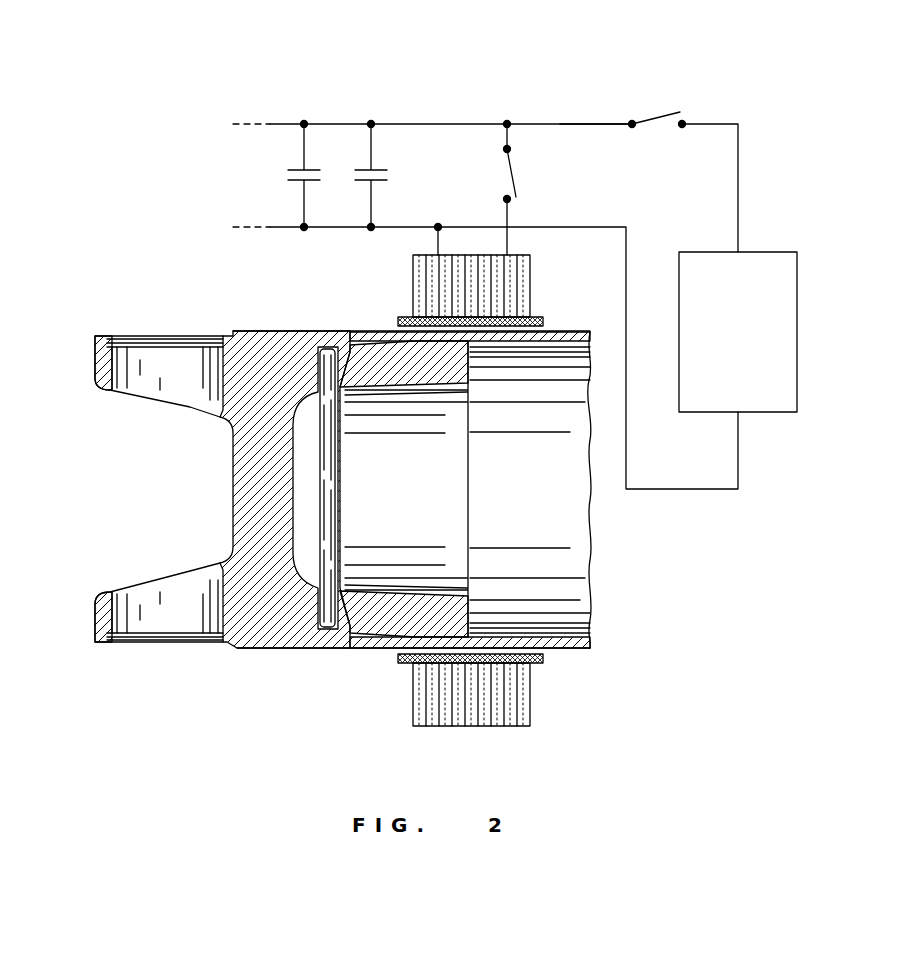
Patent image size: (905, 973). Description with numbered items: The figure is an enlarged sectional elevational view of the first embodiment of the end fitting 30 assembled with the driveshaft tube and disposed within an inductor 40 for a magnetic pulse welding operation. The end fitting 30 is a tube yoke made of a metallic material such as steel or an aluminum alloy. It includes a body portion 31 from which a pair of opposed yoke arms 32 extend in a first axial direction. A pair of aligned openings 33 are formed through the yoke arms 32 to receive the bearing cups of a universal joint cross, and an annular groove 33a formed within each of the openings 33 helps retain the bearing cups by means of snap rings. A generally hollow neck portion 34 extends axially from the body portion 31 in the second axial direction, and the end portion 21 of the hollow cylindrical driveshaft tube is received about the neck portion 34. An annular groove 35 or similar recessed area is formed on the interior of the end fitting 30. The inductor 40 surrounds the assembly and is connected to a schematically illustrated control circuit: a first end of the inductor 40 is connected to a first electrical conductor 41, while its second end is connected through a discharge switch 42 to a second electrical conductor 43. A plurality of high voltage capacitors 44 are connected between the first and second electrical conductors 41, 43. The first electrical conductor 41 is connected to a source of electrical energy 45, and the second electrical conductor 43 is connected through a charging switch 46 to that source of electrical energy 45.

The end portion 21 is at (560, 640).
The end fitting 30 is at (218, 688).
The body portion 31 is at (272, 627).
The yoke arms 32 is at (93, 365).
The openings 33 is at (110, 378).
The annular groove 33a is at (182, 342).
The neck portion 34 is at (450, 365).
The annular groove 35 is at (322, 390).
The inductor 40 is at (412, 270).
The first electrical conductor 41 is at (672, 490).
The discharge switch 42 is at (515, 176).
The second electrical conductor 43 is at (563, 122).
The high voltage capacitors 44 is at (293, 170).
The source of electrical energy 45 is at (797, 328).
The charging switch 46 is at (660, 112).